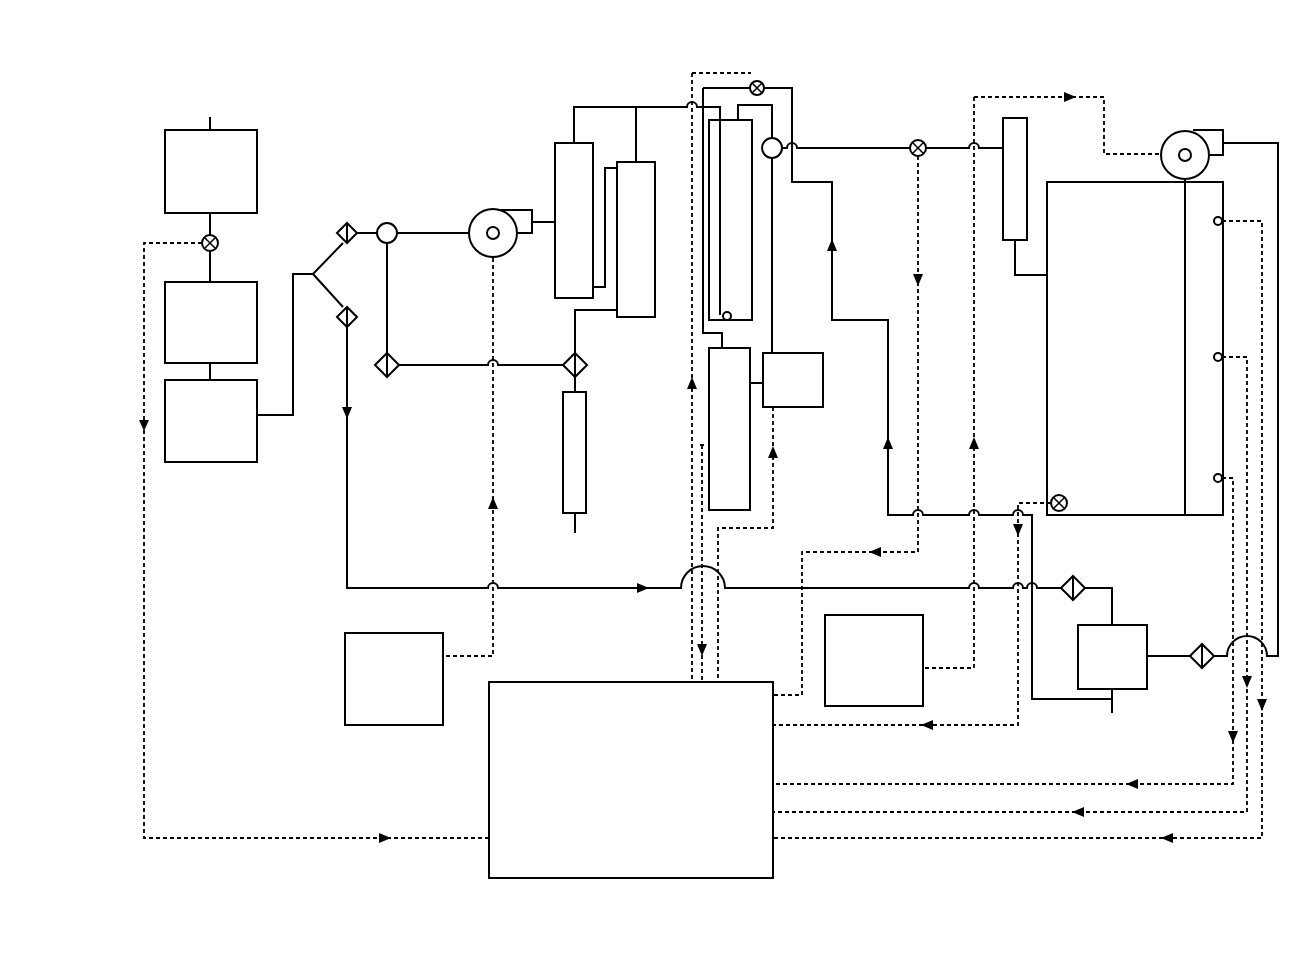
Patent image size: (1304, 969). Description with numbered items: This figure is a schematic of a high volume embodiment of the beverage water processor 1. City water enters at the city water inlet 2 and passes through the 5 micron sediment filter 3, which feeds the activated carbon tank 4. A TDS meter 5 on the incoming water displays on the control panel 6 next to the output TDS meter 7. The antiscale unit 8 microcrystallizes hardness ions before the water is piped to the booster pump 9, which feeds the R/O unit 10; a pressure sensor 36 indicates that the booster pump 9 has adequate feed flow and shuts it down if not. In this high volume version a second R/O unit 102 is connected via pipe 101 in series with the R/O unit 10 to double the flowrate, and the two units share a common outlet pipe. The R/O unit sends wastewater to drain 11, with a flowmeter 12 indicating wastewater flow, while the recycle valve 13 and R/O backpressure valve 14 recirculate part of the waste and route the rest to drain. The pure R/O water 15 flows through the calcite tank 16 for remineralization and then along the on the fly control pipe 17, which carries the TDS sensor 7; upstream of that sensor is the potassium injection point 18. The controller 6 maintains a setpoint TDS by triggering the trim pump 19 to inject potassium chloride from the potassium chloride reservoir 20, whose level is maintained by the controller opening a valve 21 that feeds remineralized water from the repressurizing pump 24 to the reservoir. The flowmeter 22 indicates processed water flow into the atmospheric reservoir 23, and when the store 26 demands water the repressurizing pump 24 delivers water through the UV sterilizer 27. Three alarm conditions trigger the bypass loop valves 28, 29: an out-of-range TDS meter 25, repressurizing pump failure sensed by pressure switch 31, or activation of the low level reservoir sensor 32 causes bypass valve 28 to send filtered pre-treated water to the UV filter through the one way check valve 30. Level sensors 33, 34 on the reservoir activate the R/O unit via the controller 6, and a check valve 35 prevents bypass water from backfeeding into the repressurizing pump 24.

The beverage water processor 1 is at (534, 98).
The city water inlet 2 is at (213, 120).
The 5 micron sediment filter 3 is at (258, 163).
The activated carbon tank 4 is at (258, 322).
The TDS meter 5 is at (201, 240).
The control panel 6 is at (774, 858).
The output TDS meter 7 is at (912, 156).
The antiscale unit 8 is at (258, 452).
The booster pump 9 is at (476, 217).
The R/O unit 10 is at (554, 258).
The drain 11 is at (577, 520).
The flowmeter 12 is at (587, 474).
The recycle valve 13 is at (393, 360).
The R/O backpressure valve 14 is at (565, 358).
The pure R/O water 15 is at (643, 93).
The calcite tank 16 is at (752, 255).
The on the fly control pipe 17 is at (839, 149).
The potassium injection point 18 is at (777, 158).
The trim pump 19 is at (824, 390).
The potassium chloride reservoir 20 is at (752, 480).
The valve 21 is at (760, 84).
The flowmeter 22 is at (1028, 158).
The atmospheric reservoir 23 is at (1046, 338).
The repressurizing pump 24 is at (1164, 141).
The TDS meter 25 is at (1053, 497).
The store 26 is at (1114, 710).
The UV sterilizer 27 is at (1077, 656).
The bypass valve 28 is at (342, 327).
The bypass loop valve 29 is at (350, 244).
The one way check valve 30 is at (1085, 585).
The pressure switch 31 is at (924, 634).
The low level reservoir sensor 32 is at (1214, 481).
The reservoir level sensor 33 is at (1215, 361).
The reservoir level sensor 34 is at (1215, 226).
The check valve 35 is at (1205, 668).
The pressure sensor 36 is at (344, 683).
The pipe 101 is at (607, 167).
The second R/O unit 102 is at (656, 165).